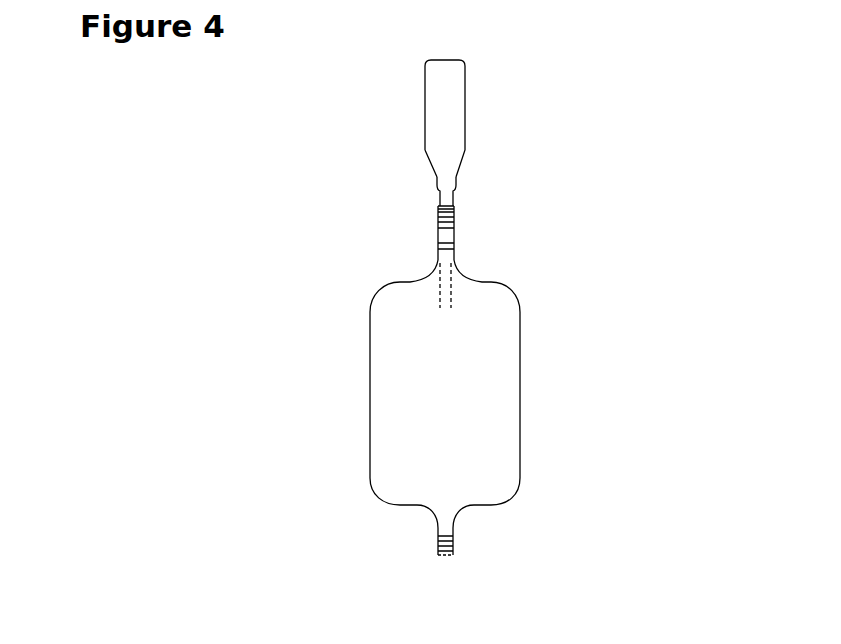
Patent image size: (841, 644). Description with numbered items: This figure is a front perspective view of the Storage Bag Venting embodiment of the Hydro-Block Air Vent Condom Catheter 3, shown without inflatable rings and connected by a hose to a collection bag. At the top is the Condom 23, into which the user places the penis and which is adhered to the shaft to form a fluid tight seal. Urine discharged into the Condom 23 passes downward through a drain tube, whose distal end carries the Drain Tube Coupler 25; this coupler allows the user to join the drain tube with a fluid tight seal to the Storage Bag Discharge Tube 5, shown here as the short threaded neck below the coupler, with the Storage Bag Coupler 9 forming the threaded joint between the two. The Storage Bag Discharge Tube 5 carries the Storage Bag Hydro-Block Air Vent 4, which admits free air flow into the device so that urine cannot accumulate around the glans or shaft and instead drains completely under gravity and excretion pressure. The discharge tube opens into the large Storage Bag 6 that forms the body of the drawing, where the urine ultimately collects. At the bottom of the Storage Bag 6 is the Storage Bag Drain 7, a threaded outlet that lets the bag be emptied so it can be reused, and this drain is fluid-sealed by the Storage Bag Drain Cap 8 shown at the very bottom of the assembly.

The Storage Bag Venting embodiment of the Hydro-Block Air Vent Condom Catheter 3 is at (425, 84).
The Condom 23 is at (447, 132).
The Drain Tube Coupler 25 is at (433, 204).
The Storage Bag Coupler 9 is at (455, 213).
The Storage Bag Hydro-Block Air Vent 4 is at (449, 232).
The Storage Bag Discharge Tube 5 is at (446, 287).
The Storage Bag 6 is at (483, 380).
The Storage Bag Drain 7 is at (450, 542).
The Storage Bag Drain Cap 8 is at (437, 553).